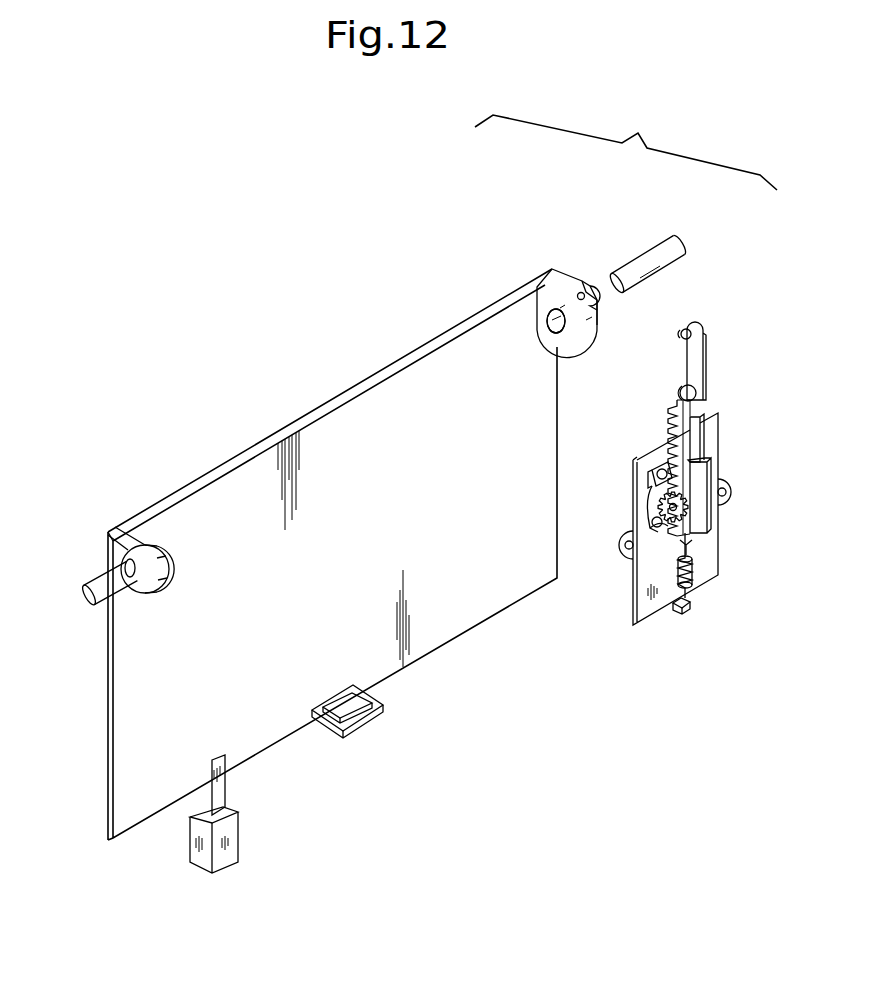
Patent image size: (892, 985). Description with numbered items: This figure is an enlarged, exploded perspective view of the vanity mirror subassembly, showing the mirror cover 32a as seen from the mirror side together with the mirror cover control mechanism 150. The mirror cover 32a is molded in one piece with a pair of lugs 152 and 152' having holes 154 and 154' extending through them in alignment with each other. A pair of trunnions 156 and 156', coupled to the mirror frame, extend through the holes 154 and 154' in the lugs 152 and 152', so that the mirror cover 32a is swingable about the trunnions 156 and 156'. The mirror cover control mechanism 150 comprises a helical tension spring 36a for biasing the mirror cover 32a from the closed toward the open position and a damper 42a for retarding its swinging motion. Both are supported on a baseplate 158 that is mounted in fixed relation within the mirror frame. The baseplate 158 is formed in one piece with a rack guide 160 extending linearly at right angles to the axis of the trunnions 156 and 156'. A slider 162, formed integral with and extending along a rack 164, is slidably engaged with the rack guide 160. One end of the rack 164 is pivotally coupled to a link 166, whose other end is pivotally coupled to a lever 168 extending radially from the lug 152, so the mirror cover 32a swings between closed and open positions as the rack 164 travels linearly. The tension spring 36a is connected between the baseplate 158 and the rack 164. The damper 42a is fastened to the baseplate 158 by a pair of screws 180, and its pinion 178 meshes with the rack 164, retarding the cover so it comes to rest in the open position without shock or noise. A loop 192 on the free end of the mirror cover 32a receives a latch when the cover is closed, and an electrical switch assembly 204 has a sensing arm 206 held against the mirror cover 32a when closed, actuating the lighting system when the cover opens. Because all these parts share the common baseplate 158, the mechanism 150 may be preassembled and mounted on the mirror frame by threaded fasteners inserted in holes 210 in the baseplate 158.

The mirror cover 32a is at (308, 435).
The mirror cover control mechanism 150 is at (675, 477).
The lug 152 is at (614, 341).
The lug 152' is at (200, 576).
The hole 154 is at (524, 356).
The hole 154' is at (171, 551).
The trunnion 156 is at (646, 225).
The trunnion 156' is at (95, 542).
The baseplate 158 is at (708, 553).
The rack guide 160 is at (705, 472).
The slider 162 is at (697, 440).
The rack 164 is at (675, 428).
The link 166 is at (697, 372).
The lever 168 is at (568, 292).
The pinion 178 is at (660, 502).
The screw 180 is at (660, 480).
The loop 192 is at (370, 710).
The electrical switch assembly 204 is at (238, 830).
The sensing arm 206 is at (207, 770).
The hole 210 is at (725, 497).
The helical tension spring 36a is at (693, 573).
The damper 42a is at (628, 521).